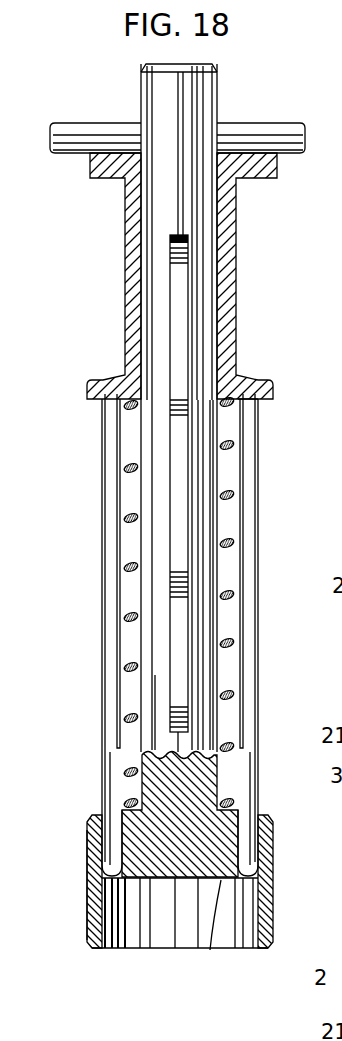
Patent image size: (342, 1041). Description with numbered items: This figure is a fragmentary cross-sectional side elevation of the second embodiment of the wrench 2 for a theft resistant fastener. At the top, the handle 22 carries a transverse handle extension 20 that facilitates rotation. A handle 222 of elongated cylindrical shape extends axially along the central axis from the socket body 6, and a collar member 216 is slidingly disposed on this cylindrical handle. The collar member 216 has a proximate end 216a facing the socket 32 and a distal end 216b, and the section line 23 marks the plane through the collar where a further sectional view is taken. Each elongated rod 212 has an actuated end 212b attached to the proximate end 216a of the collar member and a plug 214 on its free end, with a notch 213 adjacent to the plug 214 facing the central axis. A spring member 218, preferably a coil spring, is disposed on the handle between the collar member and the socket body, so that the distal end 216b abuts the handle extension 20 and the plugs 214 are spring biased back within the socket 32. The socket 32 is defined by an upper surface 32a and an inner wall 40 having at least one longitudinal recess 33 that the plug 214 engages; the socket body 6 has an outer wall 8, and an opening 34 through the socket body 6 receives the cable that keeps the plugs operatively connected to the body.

The wrench 2 is at (116, 350).
The handle extension 20 is at (83, 133).
The handle 22 is at (140, 107).
The section line 23 is at (62, 283).
The collar member 216 is at (237, 356).
The proximate end of collar member 216a is at (274, 395).
The distal end of collar member 216b is at (276, 169).
The elongated rod 212 is at (102, 697).
The actuated end of elongated rod 212b is at (246, 397).
The notch 213 is at (241, 780).
The plug 214 is at (258, 863).
The spring member 218 is at (139, 563).
The handle 222 is at (146, 493).
The opening 34 is at (100, 813).
The socket body 6 is at (86, 889).
The outer wall 8 is at (87, 927).
The inner wall 40 is at (165, 948).
The socket 32 is at (173, 949).
The upper surface 32a is at (210, 950).
The recess 33 is at (253, 949).